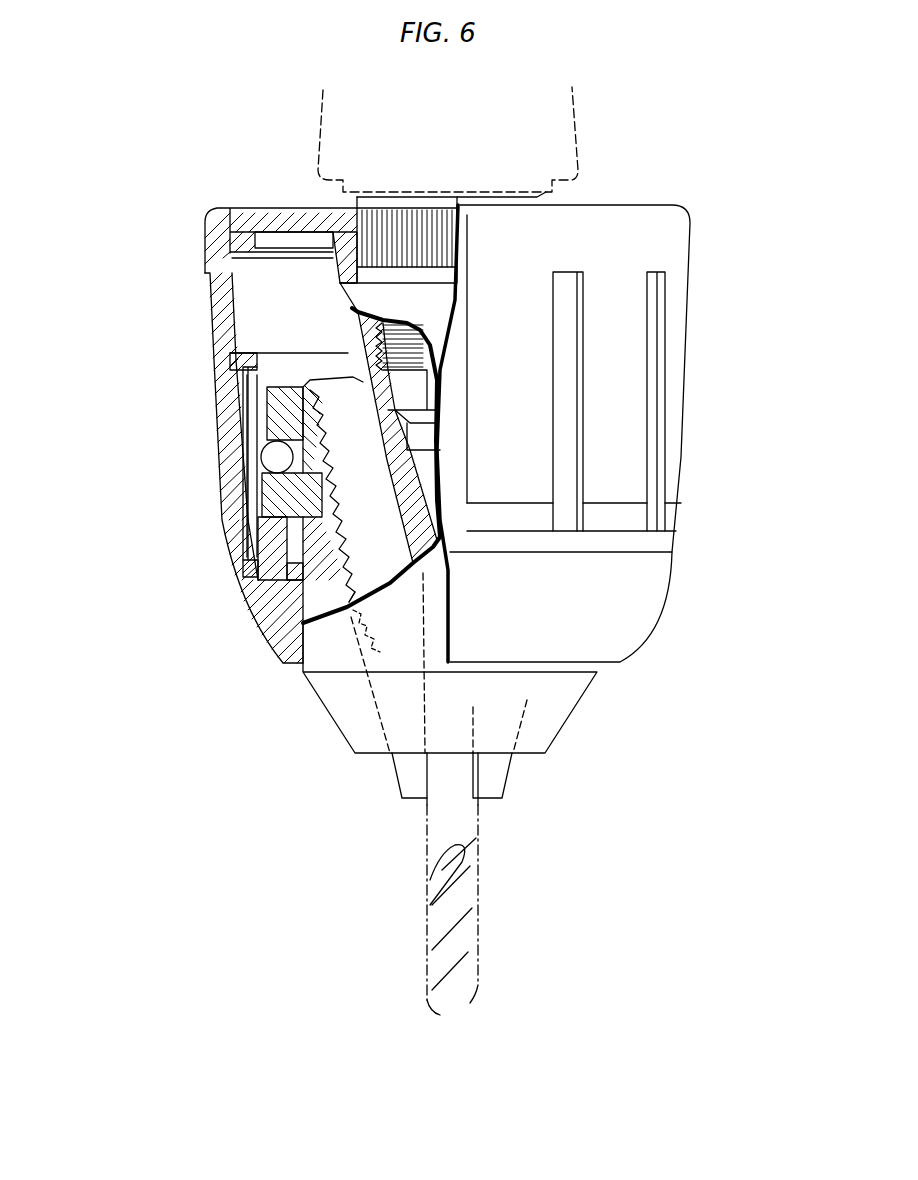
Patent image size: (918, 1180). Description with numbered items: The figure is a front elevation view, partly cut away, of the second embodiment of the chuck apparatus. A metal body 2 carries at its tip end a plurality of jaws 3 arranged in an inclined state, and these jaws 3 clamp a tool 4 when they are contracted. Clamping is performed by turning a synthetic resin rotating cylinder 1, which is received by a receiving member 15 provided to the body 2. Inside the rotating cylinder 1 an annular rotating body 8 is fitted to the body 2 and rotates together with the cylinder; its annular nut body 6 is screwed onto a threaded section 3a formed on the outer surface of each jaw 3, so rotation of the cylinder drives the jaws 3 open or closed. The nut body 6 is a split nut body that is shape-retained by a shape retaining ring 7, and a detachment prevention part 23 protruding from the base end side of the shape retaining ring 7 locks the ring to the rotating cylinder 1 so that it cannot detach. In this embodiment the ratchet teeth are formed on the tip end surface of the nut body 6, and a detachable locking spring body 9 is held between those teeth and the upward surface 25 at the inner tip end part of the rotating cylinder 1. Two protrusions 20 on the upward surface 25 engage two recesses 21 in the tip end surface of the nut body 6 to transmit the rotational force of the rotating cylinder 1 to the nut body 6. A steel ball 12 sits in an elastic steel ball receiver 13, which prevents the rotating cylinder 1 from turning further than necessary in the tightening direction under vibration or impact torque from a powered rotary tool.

The rotating cylinder 1 is at (690, 250).
The body 2 is at (347, 727).
The jaws 3 is at (400, 786).
The threaded section 3a is at (298, 643).
The tool 4 is at (430, 893).
The nut body 6 is at (272, 487).
The shape retaining ring 7 is at (245, 396).
The rotating body 8 is at (246, 503).
The locking spring body 9 is at (250, 583).
The steel ball 12 is at (276, 456).
The steel ball receiver 13 is at (266, 426).
The receiving member 15 is at (273, 222).
The protrusions 20 is at (262, 532).
The recesses 21 is at (307, 525).
The detachment prevention part 23 is at (228, 357).
The upward surface 25 is at (278, 616).